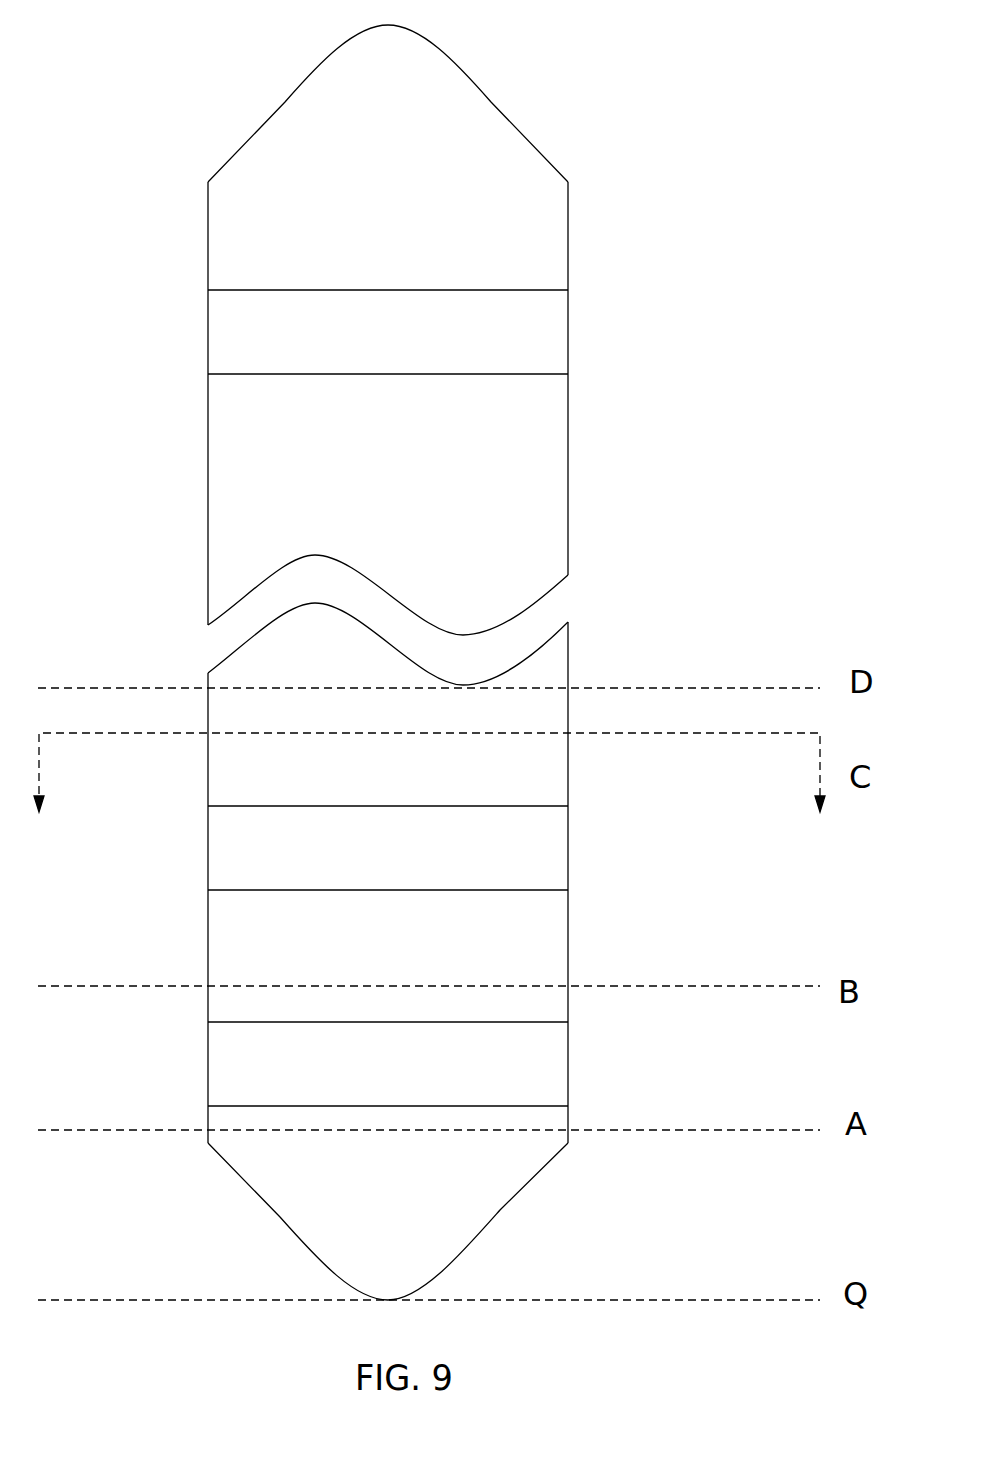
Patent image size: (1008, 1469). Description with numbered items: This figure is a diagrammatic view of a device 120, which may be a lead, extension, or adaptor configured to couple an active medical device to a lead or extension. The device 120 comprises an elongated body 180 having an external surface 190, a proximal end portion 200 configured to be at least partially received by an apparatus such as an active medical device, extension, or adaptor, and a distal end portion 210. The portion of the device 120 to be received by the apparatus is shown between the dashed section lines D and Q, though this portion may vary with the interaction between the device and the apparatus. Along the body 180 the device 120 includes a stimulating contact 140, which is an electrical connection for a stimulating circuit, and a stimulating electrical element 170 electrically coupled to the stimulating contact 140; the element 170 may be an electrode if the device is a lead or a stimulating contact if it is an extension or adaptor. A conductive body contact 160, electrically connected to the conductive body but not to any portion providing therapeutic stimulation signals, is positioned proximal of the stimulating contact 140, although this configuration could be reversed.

The device 120 is at (814, 112).
The distal end portion 210 is at (652, 300).
The stimulating electrical element 170 is at (245, 338).
The external surface 190 is at (208, 470).
The body 180 is at (497, 458).
The stimulating contact 140 is at (543, 866).
The conductive body contact 160 is at (245, 1059).
The proximal end portion 200 is at (662, 1036).